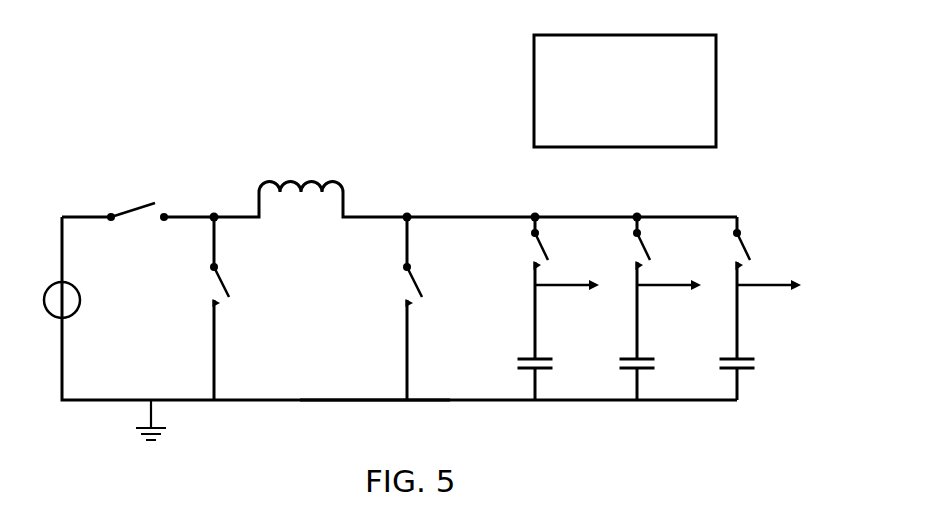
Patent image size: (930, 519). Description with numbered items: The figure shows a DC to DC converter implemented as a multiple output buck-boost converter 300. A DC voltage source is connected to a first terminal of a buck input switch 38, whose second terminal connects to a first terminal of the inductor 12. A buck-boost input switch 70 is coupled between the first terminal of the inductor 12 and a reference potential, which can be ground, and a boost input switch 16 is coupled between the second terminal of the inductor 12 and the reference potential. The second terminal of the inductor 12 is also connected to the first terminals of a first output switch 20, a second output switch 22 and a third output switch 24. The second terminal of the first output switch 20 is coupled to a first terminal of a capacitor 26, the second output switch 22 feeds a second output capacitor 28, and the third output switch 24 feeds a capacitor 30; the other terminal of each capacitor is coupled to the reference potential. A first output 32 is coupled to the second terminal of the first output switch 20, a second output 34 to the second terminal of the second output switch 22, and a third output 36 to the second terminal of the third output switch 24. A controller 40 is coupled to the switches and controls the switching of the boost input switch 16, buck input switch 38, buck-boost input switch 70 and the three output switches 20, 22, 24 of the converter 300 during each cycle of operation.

The inductor 12 is at (313, 183).
The boost input switch 16 is at (415, 302).
The first output switch 20 is at (547, 252).
The second output switch 22 is at (649, 252).
The third output switch 24 is at (749, 248).
The capacitor 26 is at (550, 363).
The second output capacitor 28 is at (652, 363).
The capacitor 30 is at (752, 363).
The first output 32 is at (563, 285).
The second output 34 is at (665, 285).
The third output 36 is at (770, 285).
The buck input switch 38 is at (133, 205).
The controller 40 is at (625, 92).
The buck-boost input switch 70 is at (223, 302).
The multiple output buck-boost converter 300 is at (497, 440).